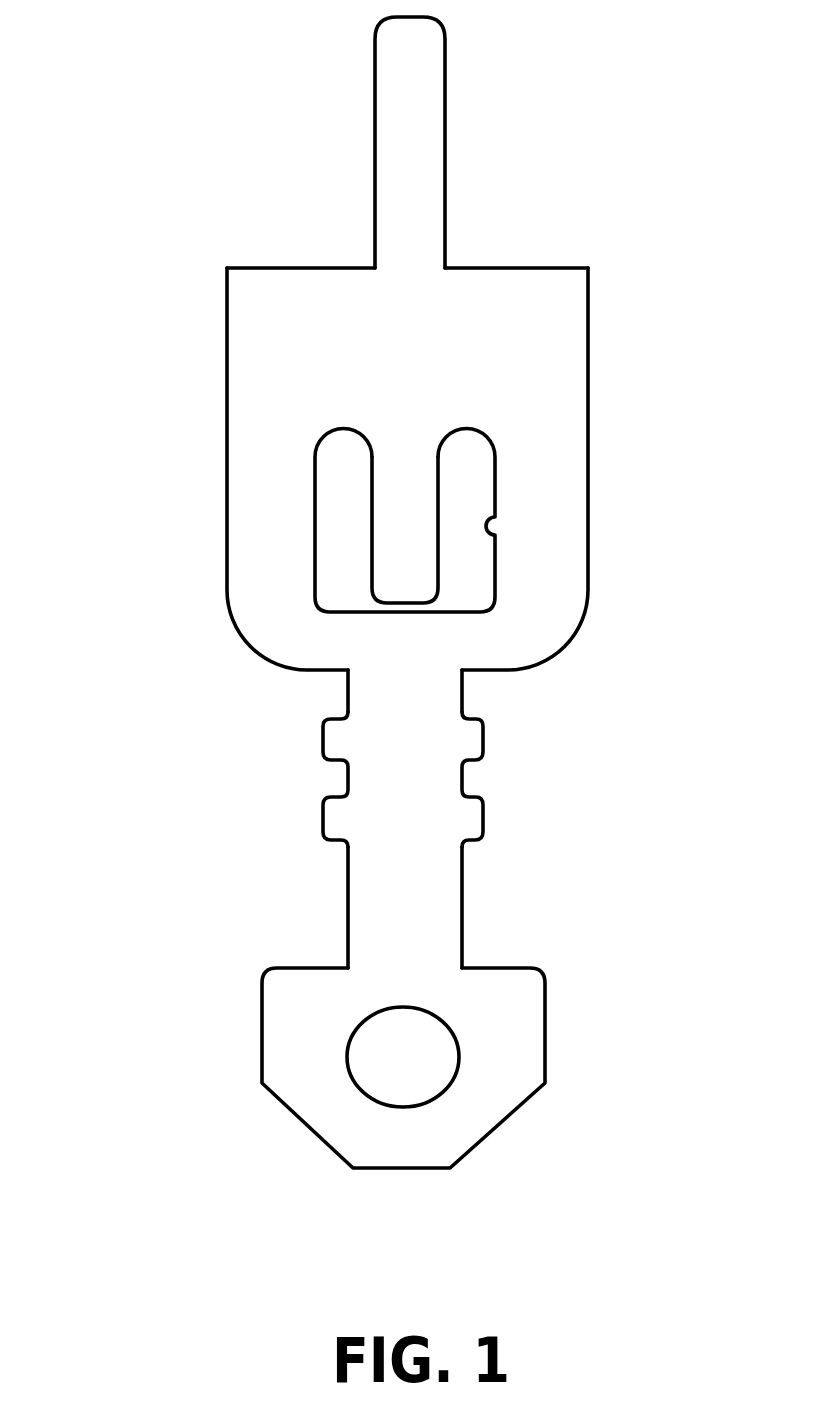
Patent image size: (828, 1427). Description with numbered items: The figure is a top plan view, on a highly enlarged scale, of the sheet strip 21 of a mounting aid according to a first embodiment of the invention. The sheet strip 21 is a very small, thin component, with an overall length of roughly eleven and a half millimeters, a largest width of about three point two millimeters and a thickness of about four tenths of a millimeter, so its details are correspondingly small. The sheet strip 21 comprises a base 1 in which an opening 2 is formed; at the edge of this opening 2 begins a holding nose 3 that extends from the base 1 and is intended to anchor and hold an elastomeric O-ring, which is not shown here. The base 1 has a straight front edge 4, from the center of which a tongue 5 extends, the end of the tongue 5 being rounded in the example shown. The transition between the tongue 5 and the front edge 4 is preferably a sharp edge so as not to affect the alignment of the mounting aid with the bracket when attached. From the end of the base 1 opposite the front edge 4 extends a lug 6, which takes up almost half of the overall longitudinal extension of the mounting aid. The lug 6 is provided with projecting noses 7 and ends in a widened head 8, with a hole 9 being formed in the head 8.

The base 1 is at (558, 457).
The opening 2 is at (497, 533).
The holding nose 3 is at (418, 567).
The front edge 4 is at (520, 268).
The tongue 5 is at (425, 120).
The lug 6 is at (413, 890).
The projecting noses 7 is at (478, 745).
The widened head 8 is at (530, 1065).
The hole 9 is at (356, 1078).
The sheet strip 21 is at (257, 395).